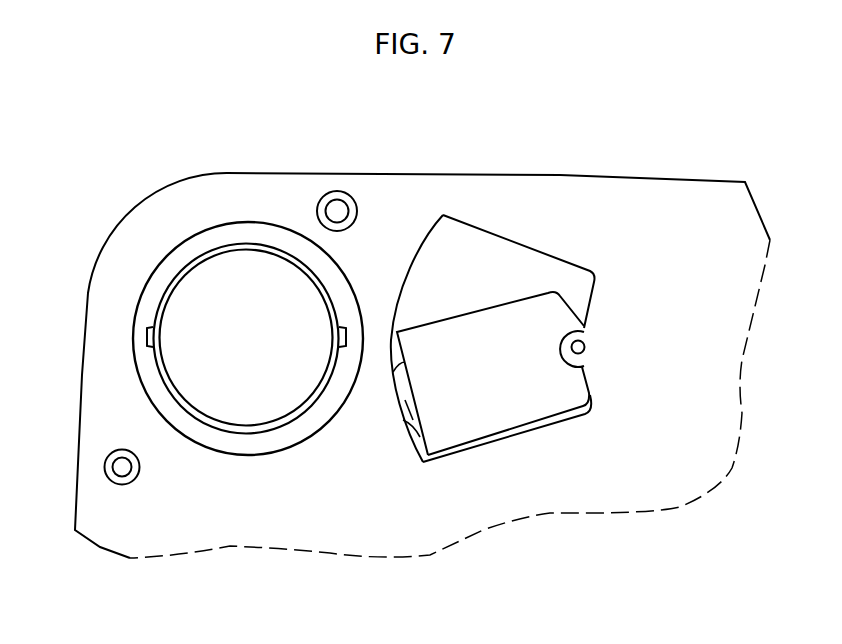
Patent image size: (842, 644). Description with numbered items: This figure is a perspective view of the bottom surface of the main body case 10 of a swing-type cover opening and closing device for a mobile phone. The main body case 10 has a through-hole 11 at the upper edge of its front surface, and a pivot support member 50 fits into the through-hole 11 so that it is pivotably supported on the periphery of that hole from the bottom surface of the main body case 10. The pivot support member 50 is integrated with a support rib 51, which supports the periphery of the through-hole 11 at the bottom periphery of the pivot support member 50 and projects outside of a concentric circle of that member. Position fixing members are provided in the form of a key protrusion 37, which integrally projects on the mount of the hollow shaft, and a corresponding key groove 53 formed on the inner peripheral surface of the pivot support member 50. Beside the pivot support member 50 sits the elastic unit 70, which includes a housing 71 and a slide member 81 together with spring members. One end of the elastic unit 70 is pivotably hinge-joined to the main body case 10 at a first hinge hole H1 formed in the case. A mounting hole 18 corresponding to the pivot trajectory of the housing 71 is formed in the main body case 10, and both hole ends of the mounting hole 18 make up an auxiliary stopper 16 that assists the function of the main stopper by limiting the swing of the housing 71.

The main body case 10 is at (523, 174).
The through-hole 11 is at (260, 362).
The auxiliary stopper 16 is at (496, 340).
The mounting hole 18 is at (523, 268).
The key protrusion 37 is at (147, 330).
The pivot support member 50 is at (209, 359).
The support rib 51 is at (302, 452).
The key groove 53 is at (351, 340).
The elastic unit 70 is at (603, 345).
The housing 71 is at (503, 405).
The slide member 81 is at (422, 462).
The first hinge hole H1 is at (585, 347).